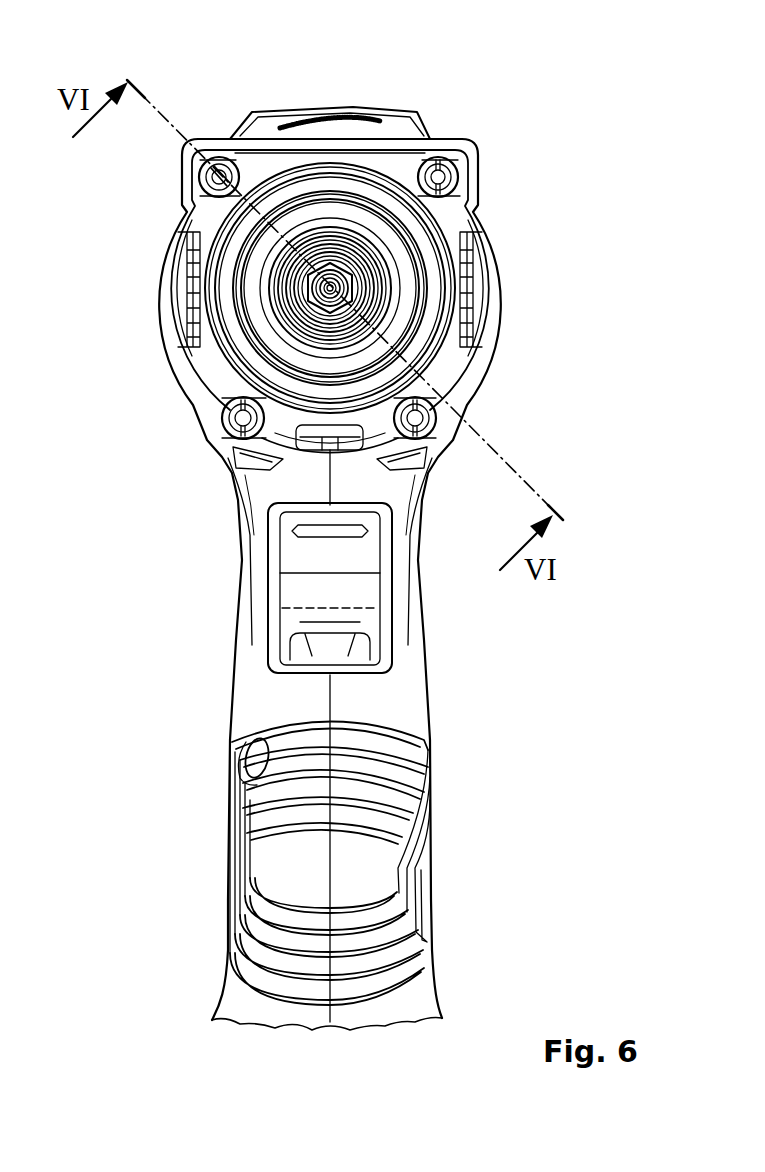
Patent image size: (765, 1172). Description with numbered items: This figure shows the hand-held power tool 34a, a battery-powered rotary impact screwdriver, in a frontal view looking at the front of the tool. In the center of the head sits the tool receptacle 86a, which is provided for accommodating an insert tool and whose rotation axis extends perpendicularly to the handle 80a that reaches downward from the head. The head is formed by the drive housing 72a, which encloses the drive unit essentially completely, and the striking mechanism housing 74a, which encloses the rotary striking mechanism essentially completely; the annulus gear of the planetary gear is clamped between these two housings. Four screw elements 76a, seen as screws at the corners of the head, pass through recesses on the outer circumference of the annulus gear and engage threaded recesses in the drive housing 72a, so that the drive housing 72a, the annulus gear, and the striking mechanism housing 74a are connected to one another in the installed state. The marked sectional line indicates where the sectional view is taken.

The hand-held power tool 34a is at (582, 108).
The drive housing 72a is at (307, 112).
The striking mechanism housing 74a is at (417, 150).
The screw element 76a is at (200, 185).
The tool receptacle 86a is at (313, 307).
The handle 80a is at (258, 695).